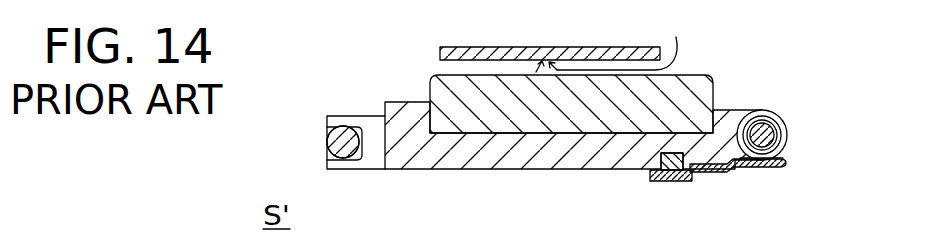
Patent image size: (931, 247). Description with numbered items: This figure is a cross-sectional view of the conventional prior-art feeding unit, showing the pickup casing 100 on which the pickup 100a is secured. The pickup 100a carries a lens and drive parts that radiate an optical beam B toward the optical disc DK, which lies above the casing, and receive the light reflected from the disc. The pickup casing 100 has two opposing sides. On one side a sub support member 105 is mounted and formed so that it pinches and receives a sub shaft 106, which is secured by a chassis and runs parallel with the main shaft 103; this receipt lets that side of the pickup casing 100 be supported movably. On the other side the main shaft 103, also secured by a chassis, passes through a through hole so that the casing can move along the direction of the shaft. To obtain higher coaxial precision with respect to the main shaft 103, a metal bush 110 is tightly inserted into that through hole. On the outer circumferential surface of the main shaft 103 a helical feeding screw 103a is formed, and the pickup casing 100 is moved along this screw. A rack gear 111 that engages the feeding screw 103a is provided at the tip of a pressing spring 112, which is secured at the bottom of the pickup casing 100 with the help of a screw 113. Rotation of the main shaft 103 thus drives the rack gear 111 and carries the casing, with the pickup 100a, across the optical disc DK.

The pickup casing 100 is at (460, 170).
The pickup 100a is at (428, 84).
The sub support member 105 is at (360, 116).
The sub shaft 106 is at (327, 147).
The optical disc DK is at (488, 46).
The optical beam B is at (606, 39).
The metal bush 110 is at (757, 122).
The main shaft 103 is at (757, 134).
The feeding screw 103a is at (777, 136).
The rack gear 111 is at (782, 158).
The pressing spring 112 is at (745, 173).
The screw 113 is at (656, 182).